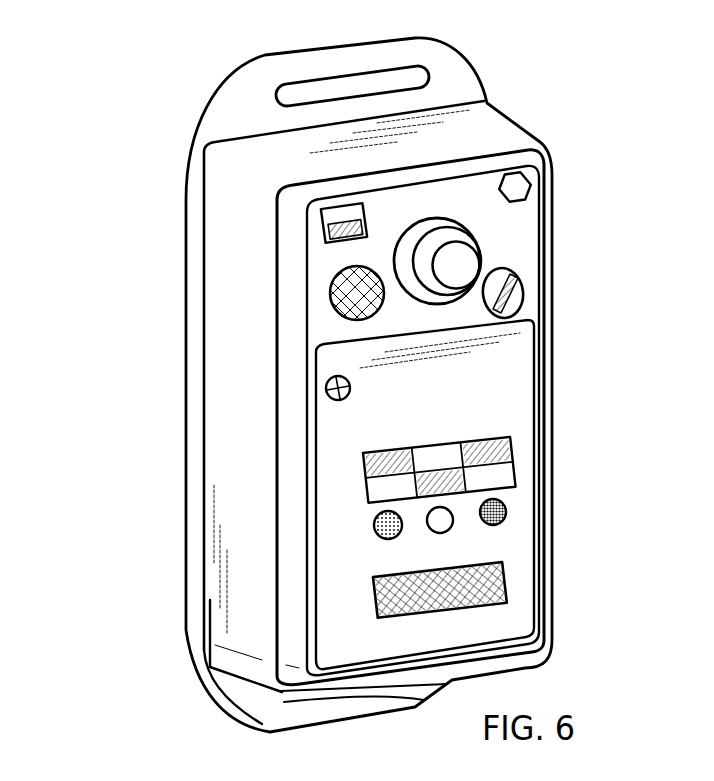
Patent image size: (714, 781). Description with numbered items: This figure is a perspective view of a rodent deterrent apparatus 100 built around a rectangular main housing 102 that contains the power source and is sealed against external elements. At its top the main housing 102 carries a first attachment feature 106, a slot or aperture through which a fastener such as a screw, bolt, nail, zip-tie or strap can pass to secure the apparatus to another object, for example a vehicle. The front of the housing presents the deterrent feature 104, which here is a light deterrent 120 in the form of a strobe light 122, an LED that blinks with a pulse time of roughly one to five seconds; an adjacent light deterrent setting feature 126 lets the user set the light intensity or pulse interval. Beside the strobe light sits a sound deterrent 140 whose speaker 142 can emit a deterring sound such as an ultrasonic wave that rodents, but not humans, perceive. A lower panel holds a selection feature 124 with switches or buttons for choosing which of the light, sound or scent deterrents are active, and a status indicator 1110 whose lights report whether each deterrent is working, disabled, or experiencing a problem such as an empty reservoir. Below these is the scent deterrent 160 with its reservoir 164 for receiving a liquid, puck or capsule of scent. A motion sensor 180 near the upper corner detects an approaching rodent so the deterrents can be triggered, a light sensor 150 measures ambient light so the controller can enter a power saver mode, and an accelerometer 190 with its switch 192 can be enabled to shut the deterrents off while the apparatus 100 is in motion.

The rodent deterrent apparatus 100 is at (394, 367).
The main housing 102 is at (553, 333).
The deterrent feature 104 is at (462, 266).
The first attachment feature 106 is at (370, 84).
The light deterrent 120 is at (460, 256).
The strobe light 122 is at (473, 242).
The selection feature 124 is at (495, 475).
The light deterrent setting feature 126 is at (513, 298).
The sound deterrent 140 is at (334, 280).
The speaker 142 is at (337, 291).
The light sensor 150 is at (327, 387).
The scent deterrent 160 is at (473, 585).
The reservoir 164 is at (483, 591).
The motion sensor 180 is at (512, 187).
The accelerometer 190 is at (327, 205).
The switch 192 is at (326, 233).
The status indicator 1110 is at (507, 508).